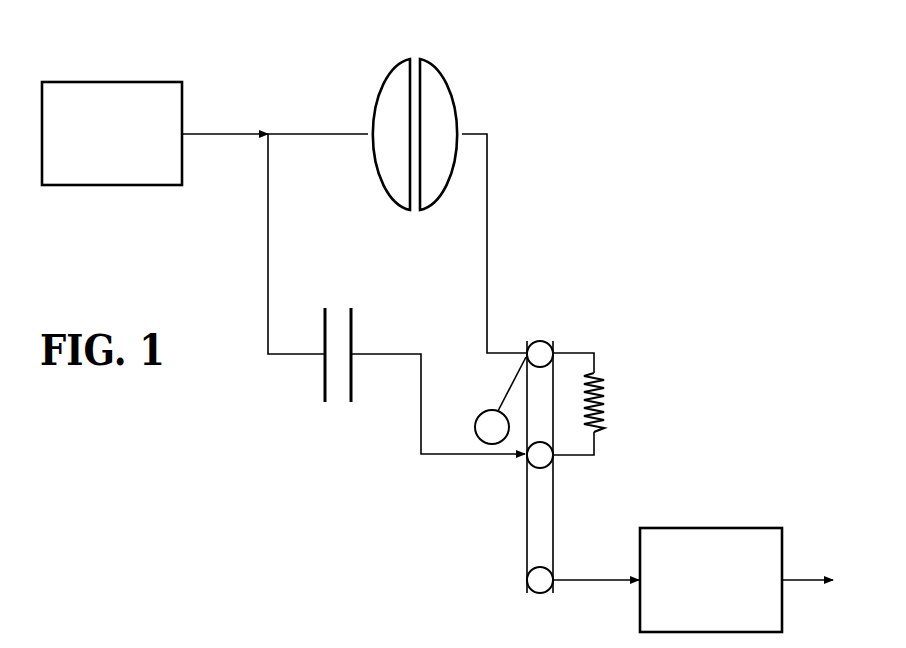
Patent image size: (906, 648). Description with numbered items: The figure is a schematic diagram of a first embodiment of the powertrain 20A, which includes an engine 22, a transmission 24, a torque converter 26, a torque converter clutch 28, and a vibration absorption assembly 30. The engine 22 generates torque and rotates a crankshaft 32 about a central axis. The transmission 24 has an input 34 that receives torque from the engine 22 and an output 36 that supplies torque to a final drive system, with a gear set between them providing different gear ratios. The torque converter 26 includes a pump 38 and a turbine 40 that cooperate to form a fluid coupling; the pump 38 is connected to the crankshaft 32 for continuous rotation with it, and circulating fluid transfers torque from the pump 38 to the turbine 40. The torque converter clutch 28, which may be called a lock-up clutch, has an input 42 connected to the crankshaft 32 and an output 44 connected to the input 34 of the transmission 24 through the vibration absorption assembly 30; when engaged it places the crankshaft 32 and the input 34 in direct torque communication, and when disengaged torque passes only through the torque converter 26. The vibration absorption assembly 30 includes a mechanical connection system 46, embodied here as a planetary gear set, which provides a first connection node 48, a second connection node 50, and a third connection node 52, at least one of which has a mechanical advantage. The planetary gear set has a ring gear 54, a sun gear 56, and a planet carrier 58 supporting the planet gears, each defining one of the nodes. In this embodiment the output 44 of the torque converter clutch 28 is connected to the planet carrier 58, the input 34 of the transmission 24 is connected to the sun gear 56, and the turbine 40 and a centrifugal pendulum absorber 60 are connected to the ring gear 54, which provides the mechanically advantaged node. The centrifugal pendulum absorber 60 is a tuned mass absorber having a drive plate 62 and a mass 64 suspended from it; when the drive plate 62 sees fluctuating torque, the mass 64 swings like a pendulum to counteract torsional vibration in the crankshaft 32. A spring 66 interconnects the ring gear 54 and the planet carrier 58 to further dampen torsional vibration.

The powertrain 20A is at (523, 71).
The engine 22 is at (113, 82).
The transmission 24 is at (725, 528).
The torque converter 26 is at (399, 112).
The torque converter clutch 28 is at (340, 304).
The vibration absorption assembly 30 is at (603, 512).
The crankshaft 32 is at (240, 133).
The input 34 is at (580, 581).
The output 36 is at (800, 580).
The pump 38 is at (371, 97).
The turbine 40 is at (462, 97).
The input 42 is at (268, 214).
The output 44 is at (383, 354).
The mechanical connection system 46 is at (526, 520).
The first connection node 48 is at (549, 464).
The second connection node 50 is at (548, 570).
The third connection node 52 is at (607, 379).
The ring gear 54 is at (537, 343).
The sun gear 56 is at (537, 590).
The planet carrier 58 is at (528, 467).
The centrifugal pendulum absorber 60 is at (500, 398).
The drive plate 62 is at (508, 382).
The mass 64 is at (476, 423).
The spring 66 is at (603, 403).